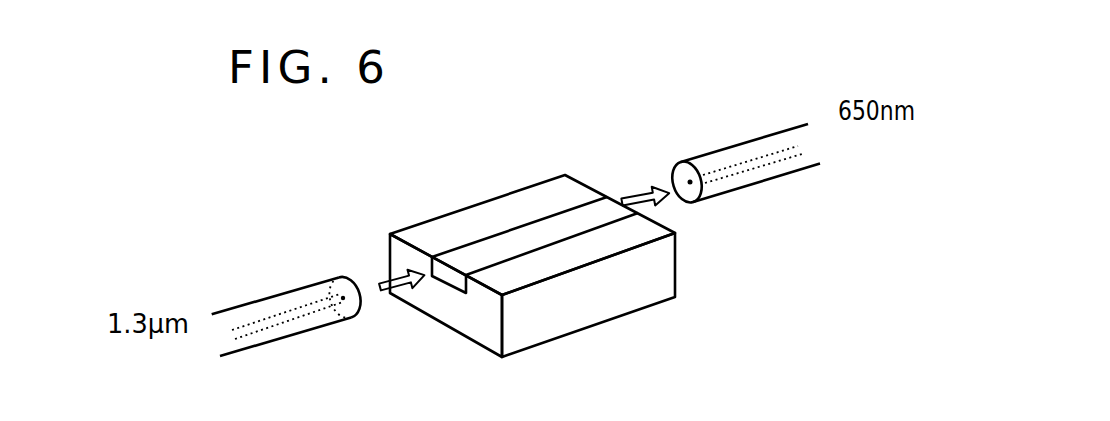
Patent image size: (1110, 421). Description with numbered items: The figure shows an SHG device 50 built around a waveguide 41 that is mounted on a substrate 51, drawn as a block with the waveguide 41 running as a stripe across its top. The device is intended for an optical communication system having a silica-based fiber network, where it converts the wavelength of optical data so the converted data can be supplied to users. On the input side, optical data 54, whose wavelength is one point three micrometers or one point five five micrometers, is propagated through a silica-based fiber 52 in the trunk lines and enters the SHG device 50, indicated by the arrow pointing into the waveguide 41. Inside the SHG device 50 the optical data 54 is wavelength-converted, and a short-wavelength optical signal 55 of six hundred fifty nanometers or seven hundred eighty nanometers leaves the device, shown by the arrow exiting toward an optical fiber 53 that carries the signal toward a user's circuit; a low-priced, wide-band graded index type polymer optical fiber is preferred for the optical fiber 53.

The SHG device 50 is at (559, 156).
The waveguide 41 is at (506, 240).
The substrate 51 is at (565, 308).
The silica-based fiber 52 is at (267, 297).
The optical fiber 53 is at (748, 140).
The optical data 54 is at (381, 284).
The short-wavelength optical signal 55 is at (641, 188).